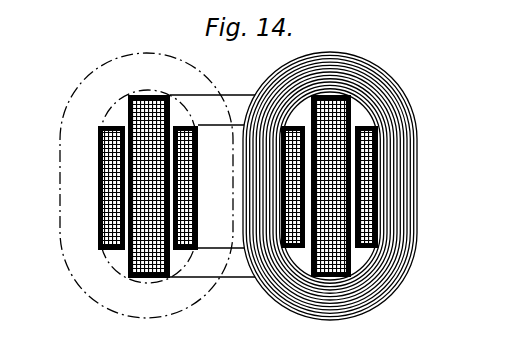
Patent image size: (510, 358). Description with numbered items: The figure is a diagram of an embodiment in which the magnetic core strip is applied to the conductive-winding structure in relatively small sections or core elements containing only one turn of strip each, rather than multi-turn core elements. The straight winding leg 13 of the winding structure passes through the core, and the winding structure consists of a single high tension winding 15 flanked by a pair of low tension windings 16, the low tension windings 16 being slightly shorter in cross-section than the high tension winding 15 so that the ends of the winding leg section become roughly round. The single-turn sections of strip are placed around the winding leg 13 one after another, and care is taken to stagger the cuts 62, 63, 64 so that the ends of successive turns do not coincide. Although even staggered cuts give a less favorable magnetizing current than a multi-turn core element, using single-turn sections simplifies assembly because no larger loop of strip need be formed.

The winding leg 13 is at (348, 219).
The high tension winding 15 is at (326, 262).
The low tension windings 16 is at (284, 243).
The cut 62 is at (373, 205).
The cut 63 is at (375, 197).
The cut 64 is at (378, 187).